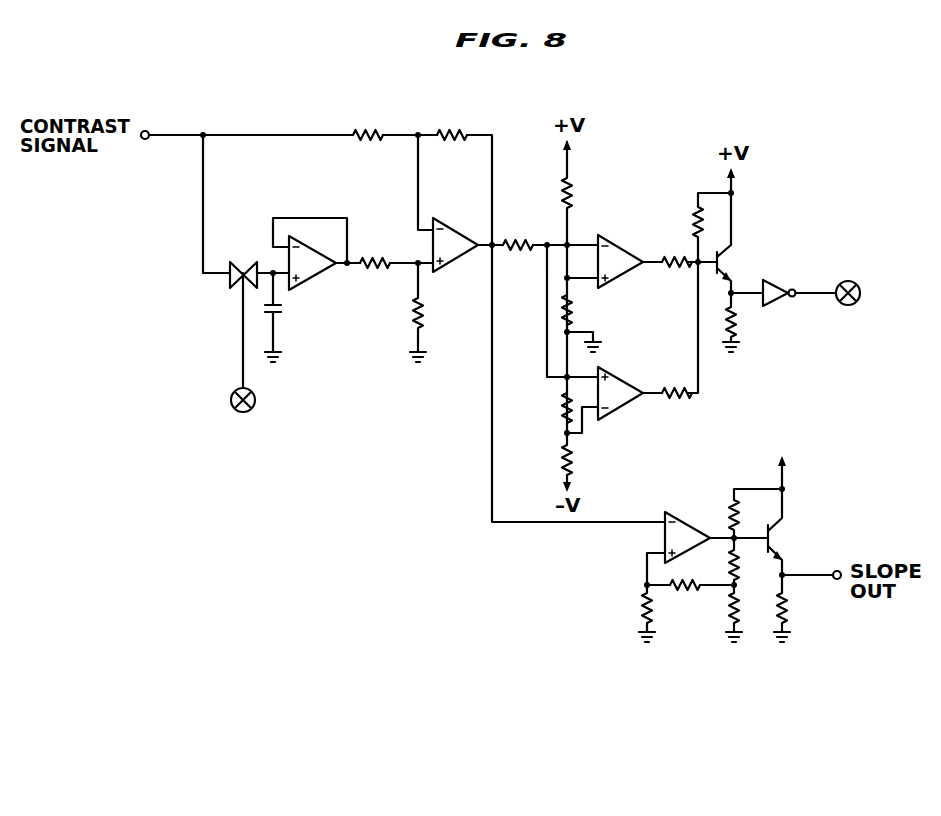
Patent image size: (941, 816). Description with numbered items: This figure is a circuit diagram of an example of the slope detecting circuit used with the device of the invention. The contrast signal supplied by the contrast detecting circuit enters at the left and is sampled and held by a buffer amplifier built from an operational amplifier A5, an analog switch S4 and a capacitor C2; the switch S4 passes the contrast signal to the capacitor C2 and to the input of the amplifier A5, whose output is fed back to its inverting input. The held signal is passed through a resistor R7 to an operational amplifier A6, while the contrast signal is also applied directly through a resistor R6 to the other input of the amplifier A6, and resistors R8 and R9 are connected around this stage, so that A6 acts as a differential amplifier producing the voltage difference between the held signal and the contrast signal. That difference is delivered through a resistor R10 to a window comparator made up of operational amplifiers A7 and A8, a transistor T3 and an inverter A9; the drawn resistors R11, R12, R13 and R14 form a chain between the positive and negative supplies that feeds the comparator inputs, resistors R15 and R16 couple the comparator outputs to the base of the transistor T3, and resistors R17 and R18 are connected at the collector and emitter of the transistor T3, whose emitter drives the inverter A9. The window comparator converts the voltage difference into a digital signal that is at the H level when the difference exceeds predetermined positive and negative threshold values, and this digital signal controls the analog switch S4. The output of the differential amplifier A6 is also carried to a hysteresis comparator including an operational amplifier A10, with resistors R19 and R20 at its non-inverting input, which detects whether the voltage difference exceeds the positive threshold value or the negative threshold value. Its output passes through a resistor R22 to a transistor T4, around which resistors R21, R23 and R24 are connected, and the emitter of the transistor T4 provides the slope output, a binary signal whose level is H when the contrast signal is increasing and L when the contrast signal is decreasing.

The resistor R6 is at (367, 123).
The resistor R7 is at (375, 251).
The resistor R8 is at (451, 123).
The resistor R9 is at (429, 312).
The resistor R10 is at (519, 234).
The resistor R11 is at (585, 192).
The resistor R12 is at (585, 310).
The resistor R13 is at (549, 409).
The resistor R14 is at (548, 462).
The resistor R15 is at (676, 250).
The resistor R16 is at (673, 382).
The resistor R17 is at (698, 227).
The resistor R18 is at (748, 322).
The resistor R19 is at (630, 613).
The resistor R20 is at (684, 601).
The resistor R21 is at (739, 513).
The resistor R22 is at (717, 561).
The resistor R23 is at (751, 613).
The resistor R24 is at (798, 608).
The capacitor C2 is at (286, 317).
The analog switch S4 is at (243, 260).
The operational amplifier A5 is at (312, 263).
The operational amplifier A6 is at (455, 245).
The operational amplifier A7 is at (620, 261).
The operational amplifier A8 is at (620, 393).
The inverter A9 is at (779, 273).
The operational amplifier A10 is at (687, 537).
The transistor T3 is at (736, 243).
The transistor T4 is at (788, 532).